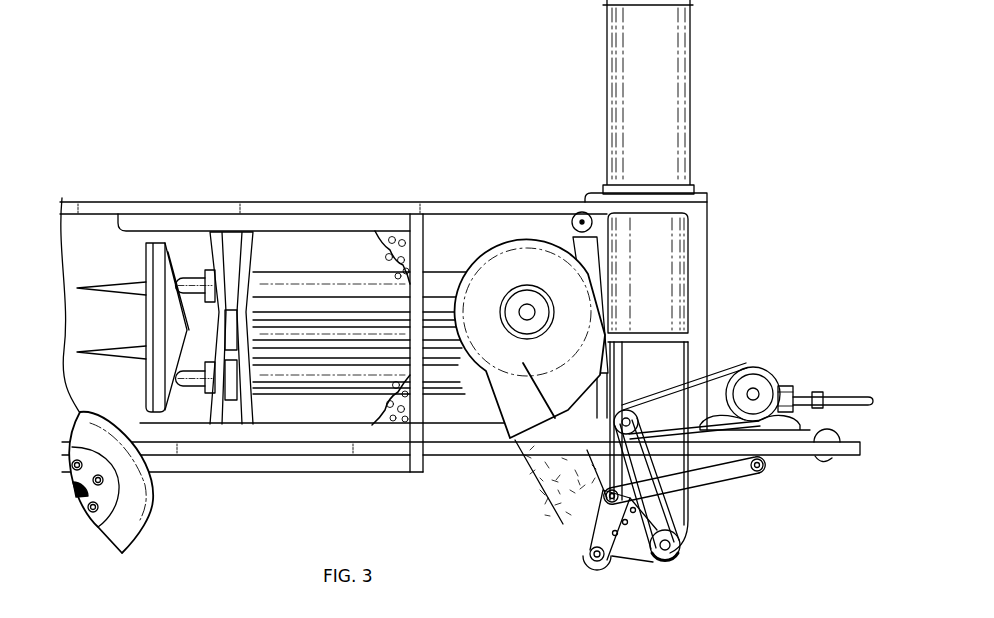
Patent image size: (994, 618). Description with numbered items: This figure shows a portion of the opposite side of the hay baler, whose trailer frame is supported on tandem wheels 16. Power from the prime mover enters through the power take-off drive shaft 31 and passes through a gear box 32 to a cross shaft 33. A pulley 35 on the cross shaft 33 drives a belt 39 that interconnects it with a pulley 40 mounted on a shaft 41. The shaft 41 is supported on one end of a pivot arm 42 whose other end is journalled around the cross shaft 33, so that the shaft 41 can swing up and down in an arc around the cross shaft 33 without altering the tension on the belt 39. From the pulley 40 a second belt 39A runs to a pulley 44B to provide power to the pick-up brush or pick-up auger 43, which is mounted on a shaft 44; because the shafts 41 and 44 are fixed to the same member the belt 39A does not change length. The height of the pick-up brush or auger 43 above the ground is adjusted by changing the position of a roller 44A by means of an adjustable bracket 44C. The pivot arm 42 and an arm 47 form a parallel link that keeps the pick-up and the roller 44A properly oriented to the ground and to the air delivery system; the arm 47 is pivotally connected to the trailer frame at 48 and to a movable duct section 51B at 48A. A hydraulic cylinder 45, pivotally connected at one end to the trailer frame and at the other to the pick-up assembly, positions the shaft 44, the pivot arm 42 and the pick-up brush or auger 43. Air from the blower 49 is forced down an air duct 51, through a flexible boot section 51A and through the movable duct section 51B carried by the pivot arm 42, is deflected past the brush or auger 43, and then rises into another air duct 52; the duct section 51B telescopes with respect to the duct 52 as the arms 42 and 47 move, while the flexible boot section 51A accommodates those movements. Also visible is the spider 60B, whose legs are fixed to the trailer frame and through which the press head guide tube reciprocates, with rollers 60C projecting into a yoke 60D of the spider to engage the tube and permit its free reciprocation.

The tandem wheels 16 is at (156, 488).
The power take-off drive shaft 31 is at (857, 392).
The gear box 32 is at (765, 392).
The cross shaft 33 is at (755, 390).
The pulley 35 is at (794, 396).
The belt 39 is at (721, 384).
The belt 39A is at (644, 535).
The pulley 40 is at (611, 424).
The shaft 41 is at (620, 455).
The pivot arm 42 is at (661, 417).
The pick-up brush or pick-up auger 43 is at (664, 562).
The shaft 44 is at (683, 552).
The roller 44A is at (594, 560).
The pulley 44B is at (658, 562).
The adjustable bracket 44C is at (590, 548).
The hydraulic cylinder 45 is at (572, 246).
The arm 47 is at (738, 476).
The pivotal connection to trailer frame 48 is at (762, 468).
The pivotal connection to movable duct section 48A is at (689, 489).
The blower 49 is at (493, 268).
The air duct 51 is at (512, 449).
The flexible boot section 51A is at (522, 468).
The movable duct section 51B is at (688, 532).
The air duct 52 is at (680, 262).
The spider 60B is at (227, 247).
The rollers 60C is at (233, 342).
The yoke 60D is at (220, 339).